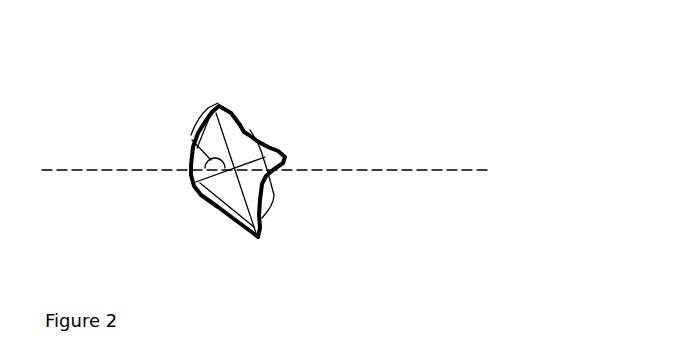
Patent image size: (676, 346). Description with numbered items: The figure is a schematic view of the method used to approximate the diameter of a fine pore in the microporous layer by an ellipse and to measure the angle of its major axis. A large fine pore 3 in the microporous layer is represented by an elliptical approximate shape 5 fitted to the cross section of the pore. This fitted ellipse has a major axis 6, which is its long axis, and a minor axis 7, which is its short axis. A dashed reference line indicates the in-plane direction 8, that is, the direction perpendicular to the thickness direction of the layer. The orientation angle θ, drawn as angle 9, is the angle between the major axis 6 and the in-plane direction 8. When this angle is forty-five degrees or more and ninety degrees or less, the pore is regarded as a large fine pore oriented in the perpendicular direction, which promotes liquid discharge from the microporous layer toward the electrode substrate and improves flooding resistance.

The large fine pore 3 is at (283, 158).
The elliptical approximate shape of cross section of fine pore 5 is at (270, 207).
The major axis of elliptical approximate shape 6 is at (222, 108).
The minor axis of elliptical approximate shape 7 is at (190, 172).
The in-plane direction 8 is at (470, 170).
The orientation angle θ 9 is at (192, 140).